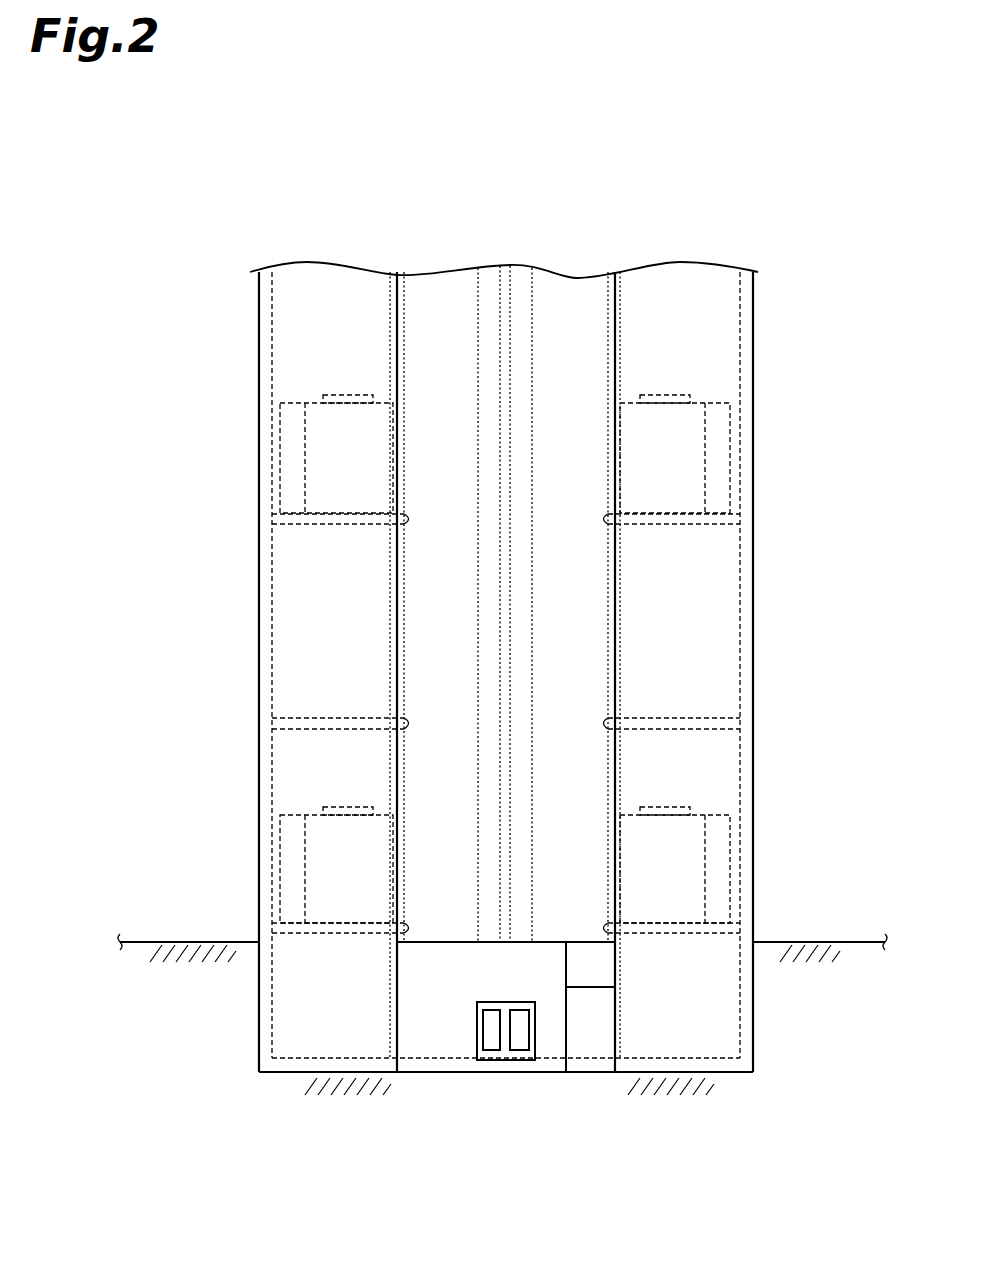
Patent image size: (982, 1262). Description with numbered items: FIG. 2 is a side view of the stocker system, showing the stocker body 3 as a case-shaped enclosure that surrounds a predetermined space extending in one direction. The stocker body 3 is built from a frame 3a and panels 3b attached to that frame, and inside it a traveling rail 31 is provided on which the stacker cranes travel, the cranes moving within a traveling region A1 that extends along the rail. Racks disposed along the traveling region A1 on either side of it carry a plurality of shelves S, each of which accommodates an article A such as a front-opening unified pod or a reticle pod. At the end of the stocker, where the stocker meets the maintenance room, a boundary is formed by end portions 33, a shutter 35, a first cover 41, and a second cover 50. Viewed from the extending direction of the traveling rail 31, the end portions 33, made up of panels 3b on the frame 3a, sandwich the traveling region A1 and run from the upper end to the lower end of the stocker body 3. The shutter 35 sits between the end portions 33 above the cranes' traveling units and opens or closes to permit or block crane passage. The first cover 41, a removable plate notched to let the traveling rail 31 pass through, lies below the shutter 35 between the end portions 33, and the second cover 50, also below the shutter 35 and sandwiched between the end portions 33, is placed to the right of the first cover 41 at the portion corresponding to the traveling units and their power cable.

The stocker body 3 is at (783, 170).
The frame 3a is at (753, 312).
The panels 3b is at (740, 358).
The end portions 33 is at (328, 310).
The shutter 35 is at (440, 302).
The first cover 41 is at (439, 1030).
The traveling rail 31 is at (508, 1062).
The second cover 50 is at (590, 1028).
The article A is at (355, 436).
The shelves S is at (313, 524).
The traveling region A1 is at (613, 136).